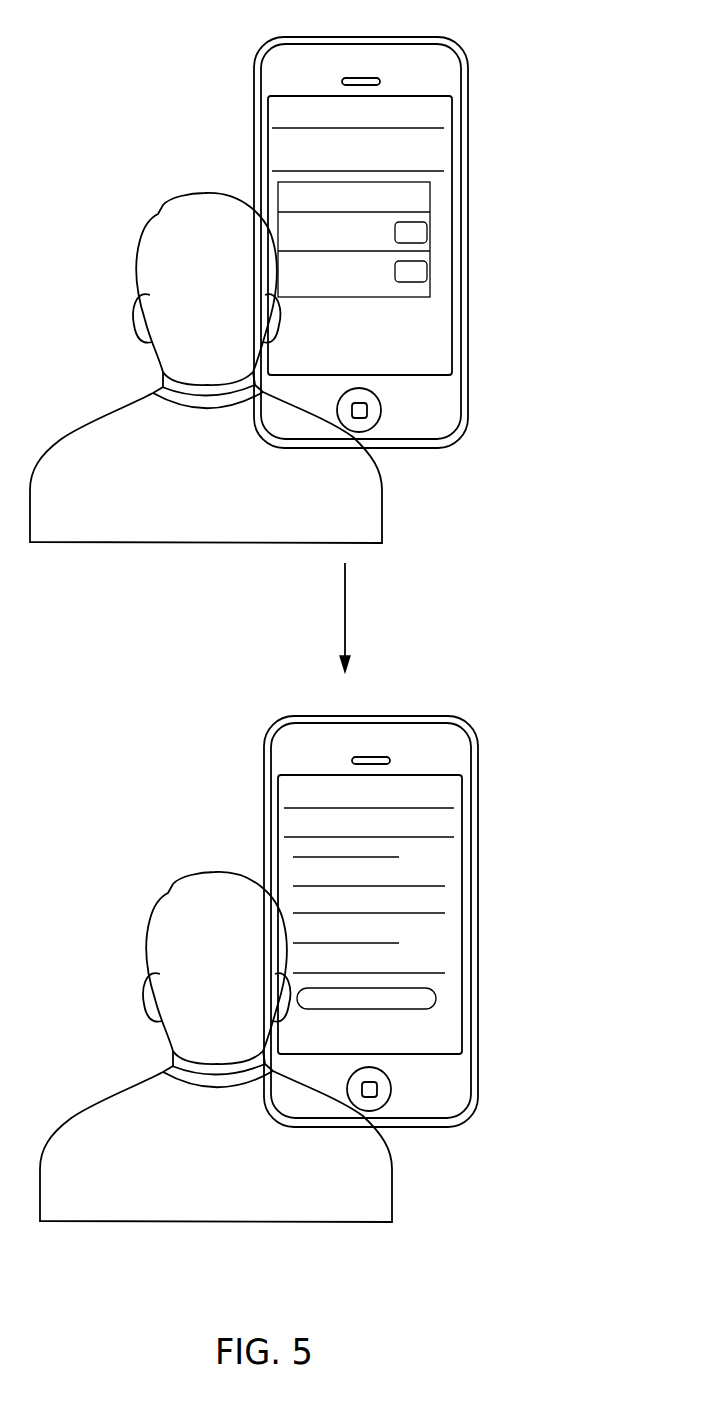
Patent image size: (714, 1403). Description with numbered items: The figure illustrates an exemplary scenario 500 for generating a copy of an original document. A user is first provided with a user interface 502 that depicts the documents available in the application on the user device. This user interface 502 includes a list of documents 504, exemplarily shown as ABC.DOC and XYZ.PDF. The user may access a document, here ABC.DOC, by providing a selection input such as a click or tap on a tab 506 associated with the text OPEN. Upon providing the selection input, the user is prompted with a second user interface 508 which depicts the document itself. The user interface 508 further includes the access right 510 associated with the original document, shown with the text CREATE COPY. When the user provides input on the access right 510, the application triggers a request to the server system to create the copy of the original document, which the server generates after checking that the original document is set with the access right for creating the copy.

The exemplary scenario 500 is at (552, 1261).
The user interface 502 is at (442, 365).
The list of documents 504 is at (440, 195).
The tab 506 is at (437, 233).
The user interface 508 is at (368, 914).
The access right 510 is at (412, 997).